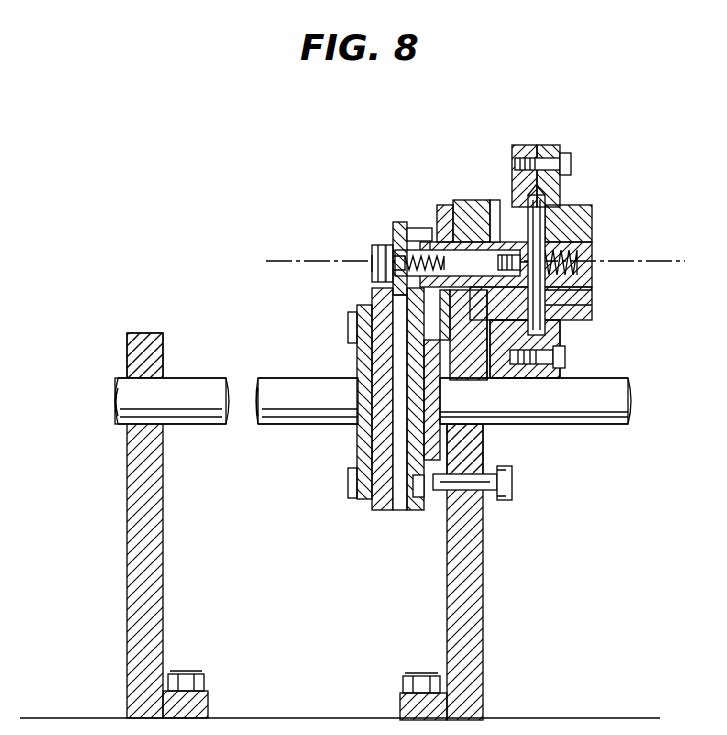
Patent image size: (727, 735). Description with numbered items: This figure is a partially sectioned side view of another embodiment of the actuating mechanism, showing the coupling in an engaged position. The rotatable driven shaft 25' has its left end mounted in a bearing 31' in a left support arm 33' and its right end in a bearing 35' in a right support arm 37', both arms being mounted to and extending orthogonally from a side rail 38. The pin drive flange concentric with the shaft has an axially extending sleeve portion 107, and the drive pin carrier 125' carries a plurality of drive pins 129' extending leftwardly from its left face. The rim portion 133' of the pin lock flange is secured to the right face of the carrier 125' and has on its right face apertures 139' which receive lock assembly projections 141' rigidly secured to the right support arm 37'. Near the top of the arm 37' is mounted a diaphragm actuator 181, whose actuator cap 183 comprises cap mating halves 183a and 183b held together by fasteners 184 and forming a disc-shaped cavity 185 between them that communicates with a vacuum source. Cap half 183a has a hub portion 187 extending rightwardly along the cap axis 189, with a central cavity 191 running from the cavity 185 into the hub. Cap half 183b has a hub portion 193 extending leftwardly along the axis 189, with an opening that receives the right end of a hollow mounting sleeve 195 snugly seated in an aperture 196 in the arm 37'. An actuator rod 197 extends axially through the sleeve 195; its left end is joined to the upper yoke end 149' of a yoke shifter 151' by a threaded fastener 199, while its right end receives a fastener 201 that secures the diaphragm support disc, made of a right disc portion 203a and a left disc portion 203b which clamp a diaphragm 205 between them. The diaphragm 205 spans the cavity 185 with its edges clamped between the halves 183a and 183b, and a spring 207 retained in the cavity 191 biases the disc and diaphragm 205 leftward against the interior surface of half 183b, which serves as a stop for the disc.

The side rail 38 is at (300, 718).
The cap axis 189 is at (660, 261).
The left support arm 33' is at (144, 525).
The bearing 31' is at (121, 398).
The right support arm 37' is at (468, 572).
The bearing 35' is at (494, 454).
The rotatable driven shaft 25' is at (395, 393).
The drive pins 129' is at (323, 406).
The drive pin carrier 125' is at (349, 413).
The yoke shifter 151' is at (381, 421).
The rim portion 133' is at (405, 428).
The apertures 139' is at (435, 440).
The lock assembly projections 141' is at (472, 499).
The sleeve portion 107 is at (440, 392).
The actuator cap 183 is at (580, 242).
The disc-shaped cavity 185 is at (592, 220).
The hub portion 187 is at (560, 352).
The central cavity 191 is at (592, 290).
The fastener 201 is at (588, 305).
The fastener 199 is at (372, 270).
The upper yoke end 149' is at (341, 258).
The spring 207 is at (585, 276).
The diaphragm 205 is at (552, 352).
The right disc portion 203a is at (545, 210).
The left disc portion 203b is at (495, 200).
The mounting sleeve 195 is at (462, 200).
The aperture 196 is at (445, 205).
The actuator rod 197 is at (405, 232).
The cap mating half 183b is at (518, 145).
The cap mating half 183a is at (550, 145).
The fasteners 184 is at (571, 164).
The diaphragm actuator 181 is at (618, 165).
The hub portion 193 is at (495, 380).